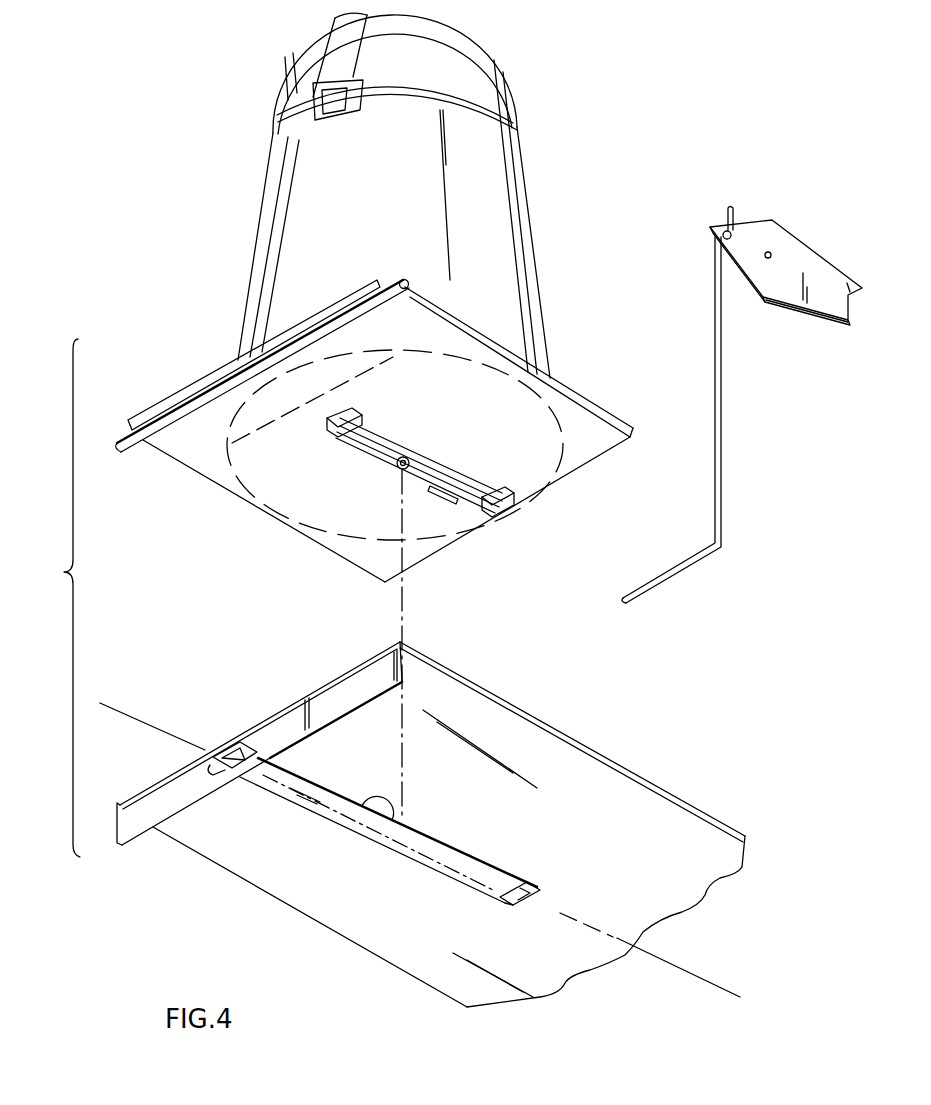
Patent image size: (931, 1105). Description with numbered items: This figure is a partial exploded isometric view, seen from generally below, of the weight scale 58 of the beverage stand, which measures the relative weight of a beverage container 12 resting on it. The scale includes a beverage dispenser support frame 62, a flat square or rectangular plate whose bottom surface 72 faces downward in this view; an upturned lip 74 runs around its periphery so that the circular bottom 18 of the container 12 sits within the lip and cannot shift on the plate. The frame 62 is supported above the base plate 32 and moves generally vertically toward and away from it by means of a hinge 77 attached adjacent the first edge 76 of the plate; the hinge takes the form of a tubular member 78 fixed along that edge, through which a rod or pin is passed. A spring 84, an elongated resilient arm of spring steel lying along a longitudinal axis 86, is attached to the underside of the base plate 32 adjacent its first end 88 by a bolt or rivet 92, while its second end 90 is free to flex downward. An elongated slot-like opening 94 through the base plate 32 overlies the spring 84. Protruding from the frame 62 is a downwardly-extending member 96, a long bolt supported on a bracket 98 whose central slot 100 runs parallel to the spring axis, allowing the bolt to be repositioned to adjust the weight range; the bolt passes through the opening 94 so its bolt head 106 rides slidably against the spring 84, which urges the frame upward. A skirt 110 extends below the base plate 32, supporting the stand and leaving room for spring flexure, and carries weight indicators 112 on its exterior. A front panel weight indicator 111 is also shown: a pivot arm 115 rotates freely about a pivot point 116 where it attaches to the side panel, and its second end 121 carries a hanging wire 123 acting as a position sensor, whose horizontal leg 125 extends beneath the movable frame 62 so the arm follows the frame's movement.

The beverage container 12 is at (538, 258).
The circular bottom 18 is at (385, 358).
The base plate 32 is at (594, 797).
The weight scale 58 is at (49, 598).
The beverage dispenser support frame 62 is at (587, 423).
The bottom surface 72 is at (214, 451).
The upturned lip 74 is at (577, 388).
The first edge 76 is at (347, 295).
The hinge 77 is at (200, 393).
The tubular member 78 is at (122, 455).
The spring 84 is at (310, 782).
The longitudinal axis 86 is at (693, 970).
The first end 88 is at (523, 905).
The second end 90 is at (205, 757).
The bolt or rivet 92 is at (530, 887).
The opening 94 is at (393, 810).
The downwardly-extending member 96 is at (398, 465).
The bracket 98 is at (383, 437).
The central slot 100 is at (462, 493).
The bolt head 106 is at (405, 472).
The skirt 110 is at (293, 717).
The front panel weight indicator 111 is at (742, 359).
The weight indicators 112 is at (232, 750).
The pivot arm 115 is at (787, 292).
The pivot point 116 is at (770, 252).
The second end 121 is at (718, 232).
The wire 123 is at (722, 455).
The horizontal leg 125 is at (653, 582).